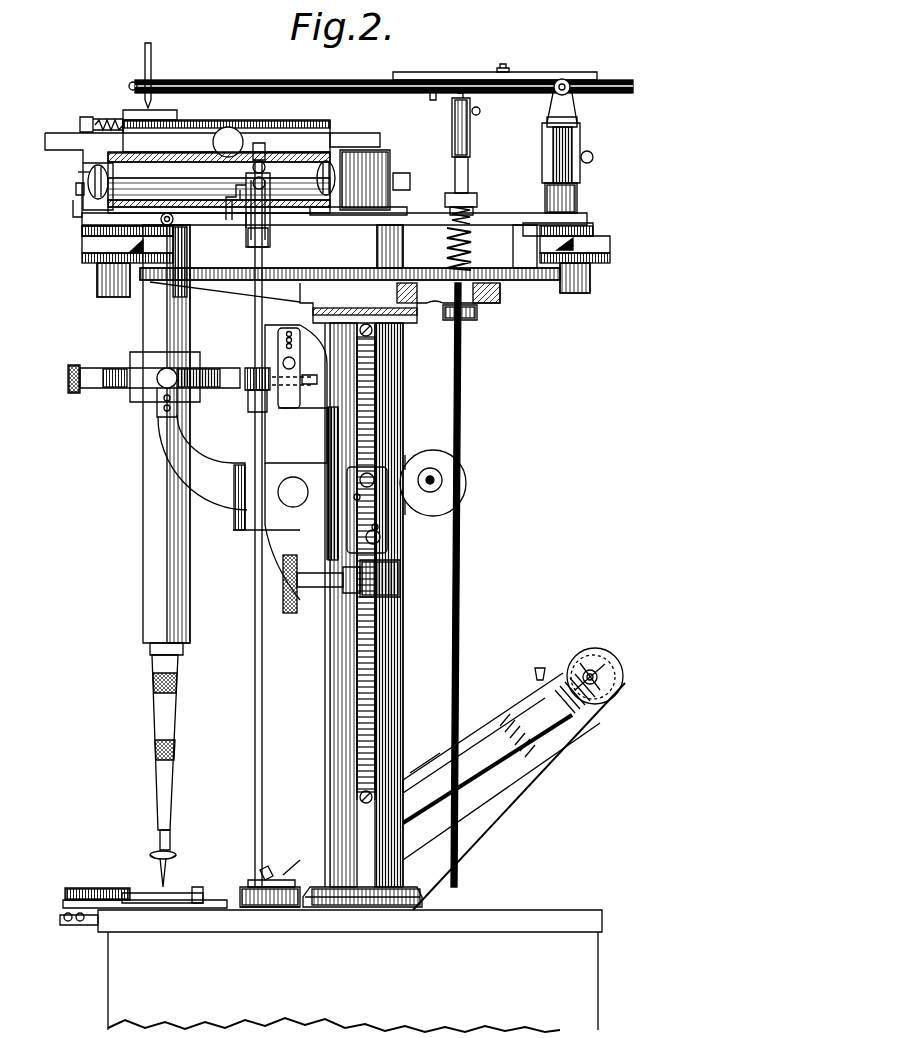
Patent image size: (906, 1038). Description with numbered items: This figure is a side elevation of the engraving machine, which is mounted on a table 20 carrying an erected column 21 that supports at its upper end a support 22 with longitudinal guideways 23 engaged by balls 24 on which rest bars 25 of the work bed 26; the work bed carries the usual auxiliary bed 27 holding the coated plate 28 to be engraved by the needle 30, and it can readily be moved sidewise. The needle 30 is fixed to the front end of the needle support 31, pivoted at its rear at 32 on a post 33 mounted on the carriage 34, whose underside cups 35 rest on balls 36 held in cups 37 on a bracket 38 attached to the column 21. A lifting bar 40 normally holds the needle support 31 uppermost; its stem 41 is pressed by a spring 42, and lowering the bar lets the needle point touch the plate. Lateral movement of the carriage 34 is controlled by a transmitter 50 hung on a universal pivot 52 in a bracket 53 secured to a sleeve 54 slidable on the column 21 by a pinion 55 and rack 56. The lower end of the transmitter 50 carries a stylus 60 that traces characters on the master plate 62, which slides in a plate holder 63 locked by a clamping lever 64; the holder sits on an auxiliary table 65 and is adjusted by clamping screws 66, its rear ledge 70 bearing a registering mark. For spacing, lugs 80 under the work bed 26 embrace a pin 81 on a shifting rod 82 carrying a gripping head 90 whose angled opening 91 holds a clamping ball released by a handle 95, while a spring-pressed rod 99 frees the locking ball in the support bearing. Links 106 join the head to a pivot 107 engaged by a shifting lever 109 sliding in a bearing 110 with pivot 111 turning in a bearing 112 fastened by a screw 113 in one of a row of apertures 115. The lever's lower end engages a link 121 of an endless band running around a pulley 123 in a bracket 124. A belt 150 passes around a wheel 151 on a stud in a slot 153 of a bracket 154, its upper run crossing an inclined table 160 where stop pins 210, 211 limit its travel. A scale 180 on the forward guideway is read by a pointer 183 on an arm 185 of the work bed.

The table 20 is at (350, 971).
The column 21 is at (345, 712).
The support 22 is at (120, 192).
The guideways 23 is at (318, 215).
The balls 24 is at (85, 180).
The bars 25 is at (105, 170).
The work bed 26 is at (45, 145).
The auxiliary bed 27 is at (228, 128).
The coated plate 28 is at (140, 114).
The needle 30 is at (151, 58).
The needle support 31 is at (370, 80).
The pivot 32 is at (563, 80).
The post 33 is at (566, 177).
The carriage 34 is at (308, 226).
The cups 35 is at (85, 230).
The balls 36 is at (130, 248).
The cups 37 is at (85, 262).
The bracket 38 is at (305, 270).
The lifting bar 40 is at (455, 104).
The stem 41 is at (462, 359).
The spring 42 is at (471, 250).
The transmitter 50 is at (150, 528).
The universal pivot 52 is at (140, 395).
The bracket 53 is at (225, 497).
The sleeve 54 is at (398, 545).
The pinion 55 is at (322, 612).
The rack 56 is at (372, 665).
The stylus 60 is at (166, 884).
The master plate 62 is at (141, 892).
The plate holder 63 is at (172, 905).
The clamping lever 64 is at (92, 896).
The auxiliary table 65 is at (135, 908).
The clamping screws 66 is at (70, 922).
The rear ledge 70 is at (200, 889).
The transverse lugs 80 is at (268, 165).
The pin 81 is at (258, 160).
The shifting rod 82 is at (266, 183).
The gripping head 90 is at (271, 190).
The opening 91 is at (174, 220).
The handle 95 is at (271, 208).
The spring-pressed rod 99 is at (228, 204).
The links 106 is at (271, 222).
The pivot 107 is at (240, 228).
The shifting lever 109 is at (255, 705).
The bearing 110 is at (248, 400).
The pivot 111 is at (306, 390).
The bearing 112 is at (280, 400).
The screw 113 is at (295, 363).
The apertures 115 is at (284, 340).
The link 121 is at (243, 890).
The pulley 123 is at (275, 908).
The bracket 124 is at (284, 874).
The belt 150 is at (515, 808).
The wheel 151 is at (586, 662).
The slot 153 is at (615, 682).
The bracket 154 is at (525, 765).
The table 160 is at (520, 712).
The scale 180 is at (74, 200).
The pointer 183 is at (78, 190).
The arm 185 is at (88, 170).
The stop pin 210 is at (540, 669).
The stop pin 211 is at (263, 870).